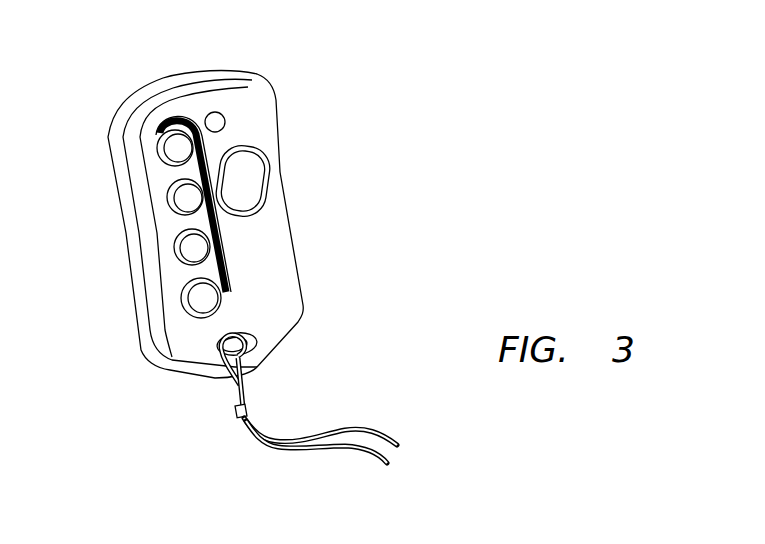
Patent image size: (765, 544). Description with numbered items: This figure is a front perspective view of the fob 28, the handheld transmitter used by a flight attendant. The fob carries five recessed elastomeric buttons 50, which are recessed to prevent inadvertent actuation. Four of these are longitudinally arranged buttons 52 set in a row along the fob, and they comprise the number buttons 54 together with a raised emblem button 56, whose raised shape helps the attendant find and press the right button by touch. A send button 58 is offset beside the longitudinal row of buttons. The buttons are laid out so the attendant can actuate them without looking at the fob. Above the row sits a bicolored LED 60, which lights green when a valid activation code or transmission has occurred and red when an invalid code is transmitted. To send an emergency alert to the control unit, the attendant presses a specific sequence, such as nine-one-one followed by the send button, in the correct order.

The fob 28 is at (433, 137).
The recessed elastomeric buttons 50 is at (133, 222).
The longitudinally arranged buttons 52 is at (150, 147).
The number buttons 54 is at (176, 127).
The raised emblem button 56 is at (222, 247).
The send button 58 is at (250, 187).
The bicolored LED 60 is at (226, 121).